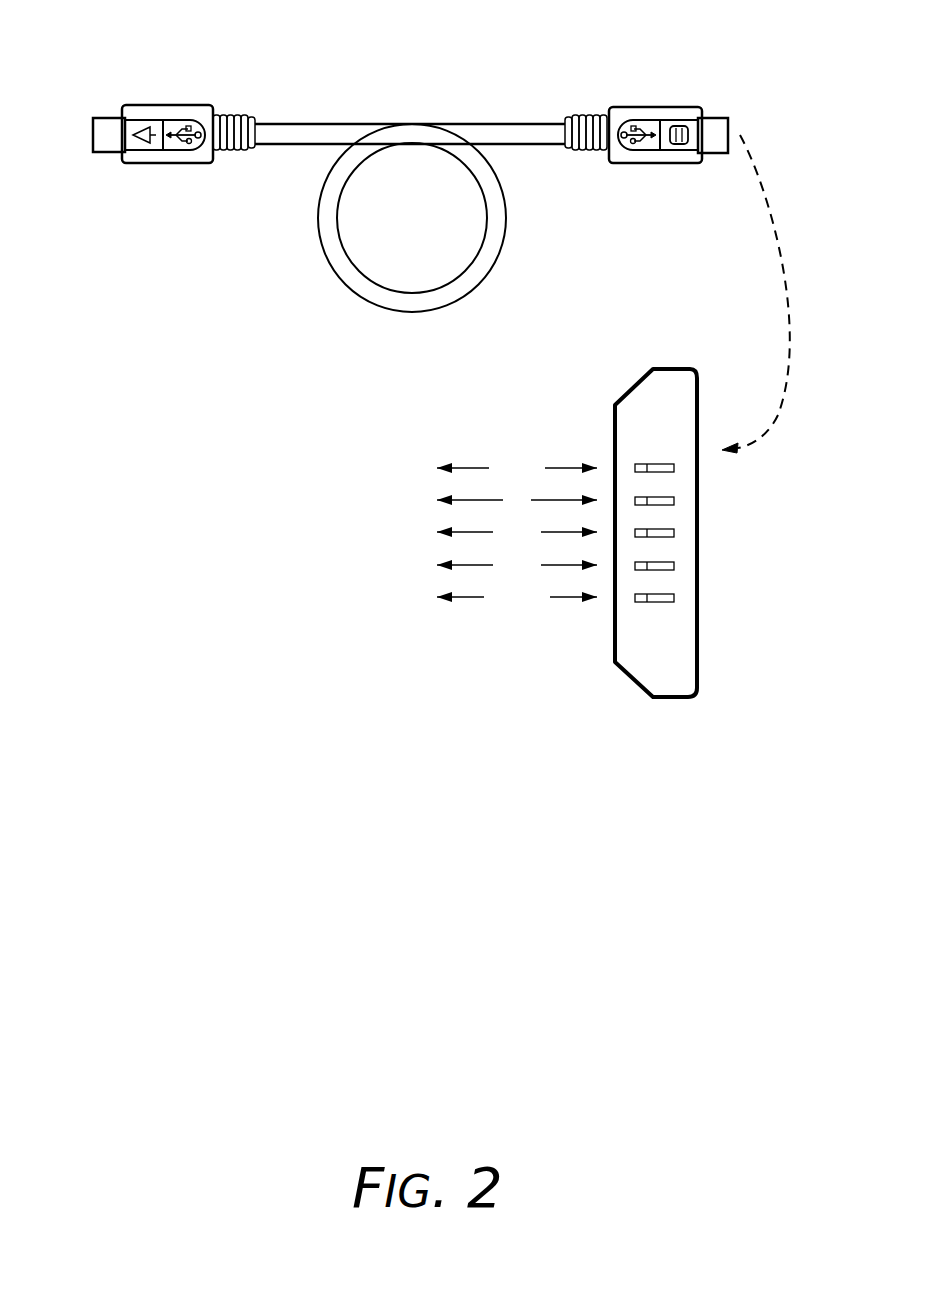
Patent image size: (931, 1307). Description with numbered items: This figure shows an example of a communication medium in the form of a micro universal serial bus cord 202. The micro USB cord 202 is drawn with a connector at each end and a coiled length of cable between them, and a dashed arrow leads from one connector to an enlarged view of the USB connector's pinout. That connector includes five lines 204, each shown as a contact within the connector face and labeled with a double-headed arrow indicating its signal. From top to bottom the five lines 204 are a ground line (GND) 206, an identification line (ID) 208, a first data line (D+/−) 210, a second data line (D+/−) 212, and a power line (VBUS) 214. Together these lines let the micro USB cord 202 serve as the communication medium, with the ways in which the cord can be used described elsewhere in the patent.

The micro universal serial bus (USB) cord 202 is at (144, 44).
The lines 204 is at (464, 656).
The ground line (GND) 206 is at (674, 472).
The identification line (ID) 208 is at (674, 505).
The first data line (D+/−) 210 is at (674, 537).
The second data line (D+/−) 212 is at (674, 570).
The power line (VBUS) 214 is at (674, 602).